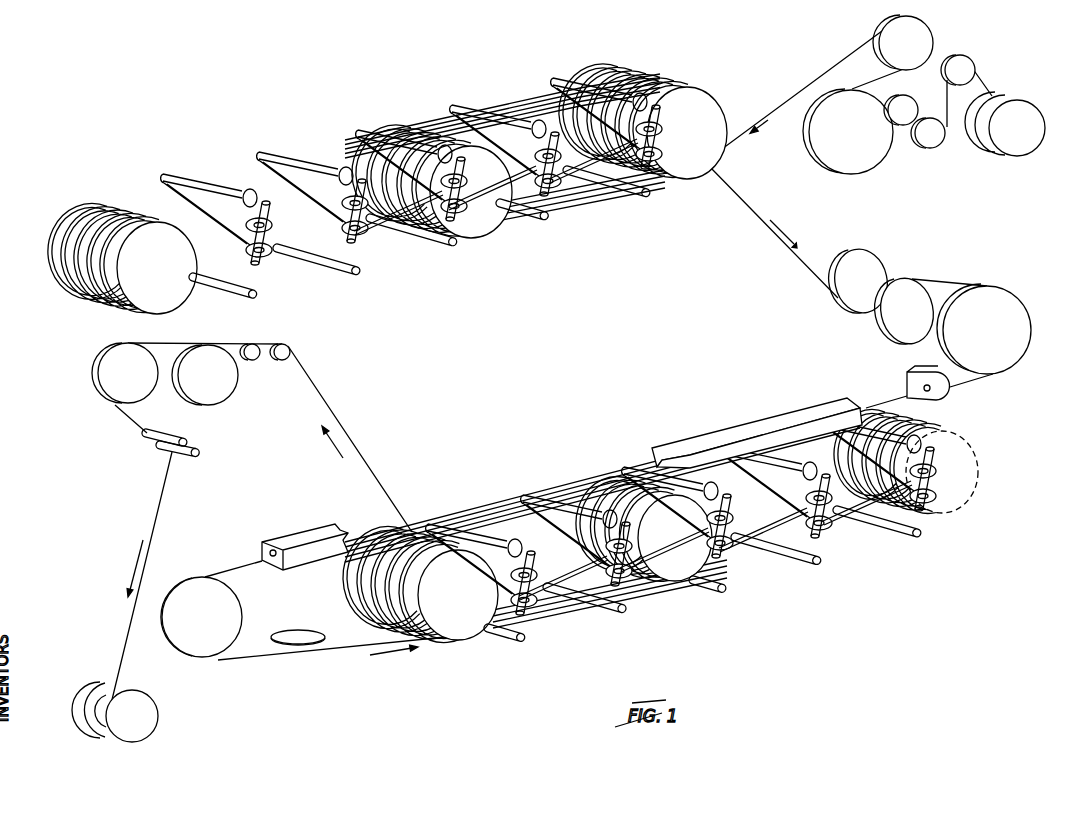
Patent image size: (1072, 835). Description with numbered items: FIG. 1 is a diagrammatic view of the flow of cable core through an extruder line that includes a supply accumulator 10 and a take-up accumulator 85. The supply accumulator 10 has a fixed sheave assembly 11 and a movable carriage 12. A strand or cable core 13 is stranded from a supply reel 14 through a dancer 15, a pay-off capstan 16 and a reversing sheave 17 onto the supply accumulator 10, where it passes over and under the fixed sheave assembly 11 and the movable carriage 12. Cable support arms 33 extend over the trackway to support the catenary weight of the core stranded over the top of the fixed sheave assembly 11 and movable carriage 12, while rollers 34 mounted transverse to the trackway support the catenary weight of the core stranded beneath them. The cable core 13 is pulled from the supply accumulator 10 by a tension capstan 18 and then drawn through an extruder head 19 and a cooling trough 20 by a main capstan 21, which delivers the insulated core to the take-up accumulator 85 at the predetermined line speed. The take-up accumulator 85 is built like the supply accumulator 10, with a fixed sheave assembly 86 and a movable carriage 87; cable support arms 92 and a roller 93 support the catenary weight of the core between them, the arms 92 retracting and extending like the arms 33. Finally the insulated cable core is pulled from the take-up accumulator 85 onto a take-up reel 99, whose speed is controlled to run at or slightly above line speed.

The supply accumulator 10 is at (505, 62).
The fixed sheave assembly 11 is at (683, 175).
The movable carriage 12 is at (180, 298).
The cable core 13 is at (780, 108).
The supply reel 14 is at (1042, 127).
The dancer 15 is at (930, 148).
The pay-off capstan 16 is at (854, 176).
The reversing sheave 17 is at (922, 32).
The tension capstan 18 is at (1035, 333).
The extruder head 19 is at (928, 372).
The cooling trough 20 is at (752, 430).
The main capstan 21 is at (203, 660).
The cable support arms 33 is at (168, 178).
The rollers 34 is at (250, 298).
The take-up accumulator 85 is at (586, 468).
The fixed sheave assembly 86 is at (462, 640).
The movable carriage 87 is at (670, 580).
The cable support arms 92 is at (436, 522).
The roller 93 is at (518, 642).
The take-up reel 99 is at (146, 734).